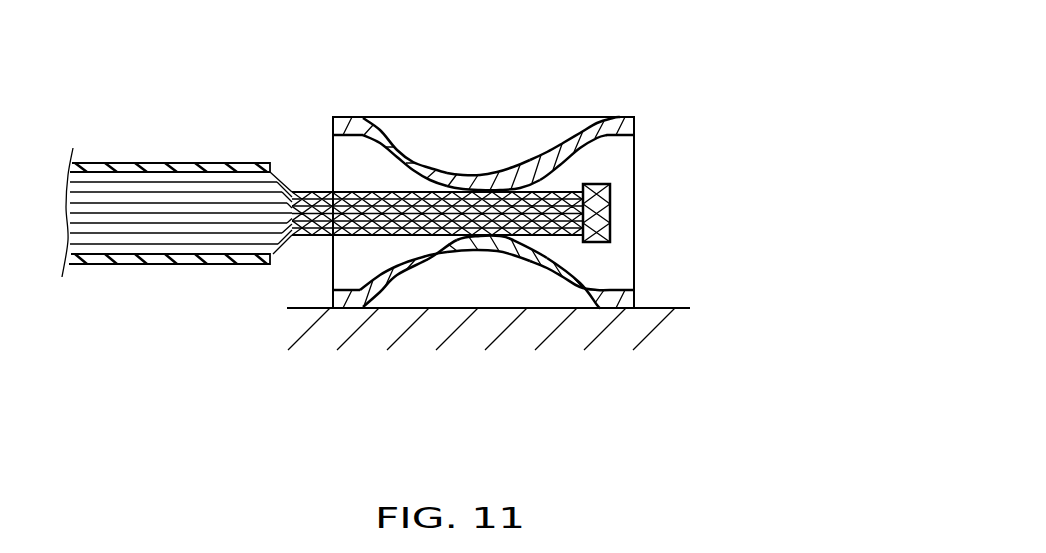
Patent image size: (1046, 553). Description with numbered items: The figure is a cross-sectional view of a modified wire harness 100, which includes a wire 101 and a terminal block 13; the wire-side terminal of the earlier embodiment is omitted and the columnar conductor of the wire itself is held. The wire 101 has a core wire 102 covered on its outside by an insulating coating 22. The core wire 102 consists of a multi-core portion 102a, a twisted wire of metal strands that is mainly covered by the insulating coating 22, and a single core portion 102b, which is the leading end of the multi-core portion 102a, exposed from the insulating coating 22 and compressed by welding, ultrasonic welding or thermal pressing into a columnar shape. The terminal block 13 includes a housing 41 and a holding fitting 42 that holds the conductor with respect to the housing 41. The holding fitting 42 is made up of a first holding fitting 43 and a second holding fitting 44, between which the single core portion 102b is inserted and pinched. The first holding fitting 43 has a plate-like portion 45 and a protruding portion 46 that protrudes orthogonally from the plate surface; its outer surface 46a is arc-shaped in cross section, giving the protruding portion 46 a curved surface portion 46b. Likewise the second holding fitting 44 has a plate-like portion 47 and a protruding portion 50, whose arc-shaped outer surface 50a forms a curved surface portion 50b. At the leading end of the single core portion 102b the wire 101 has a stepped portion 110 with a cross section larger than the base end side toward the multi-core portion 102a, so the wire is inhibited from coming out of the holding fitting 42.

The wire harness 100 is at (672, 68).
The terminal block 13 is at (678, 308).
The housing 41 is at (643, 335).
The holding fitting 42 is at (468, 231).
The first holding fitting 43 is at (468, 318).
The second holding fitting 44 is at (477, 112).
The plate-like portion 45 is at (347, 302).
The plate-like portion 47 is at (345, 125).
The protruding portion 46 is at (480, 248).
The outer surface 46a is at (413, 242).
The curved surface portion 46b is at (557, 242).
The protruding portion 50 is at (485, 175).
The outer surface 50a is at (410, 182).
The curved surface portion 50b is at (560, 182).
The insulating coating 22 is at (177, 206).
The wire 101 is at (98, 162).
The core wire 102 is at (103, 238).
The multi-core portion 102a is at (162, 232).
The single-core portion 102b is at (611, 195).
The stepped portion 110 is at (611, 232).